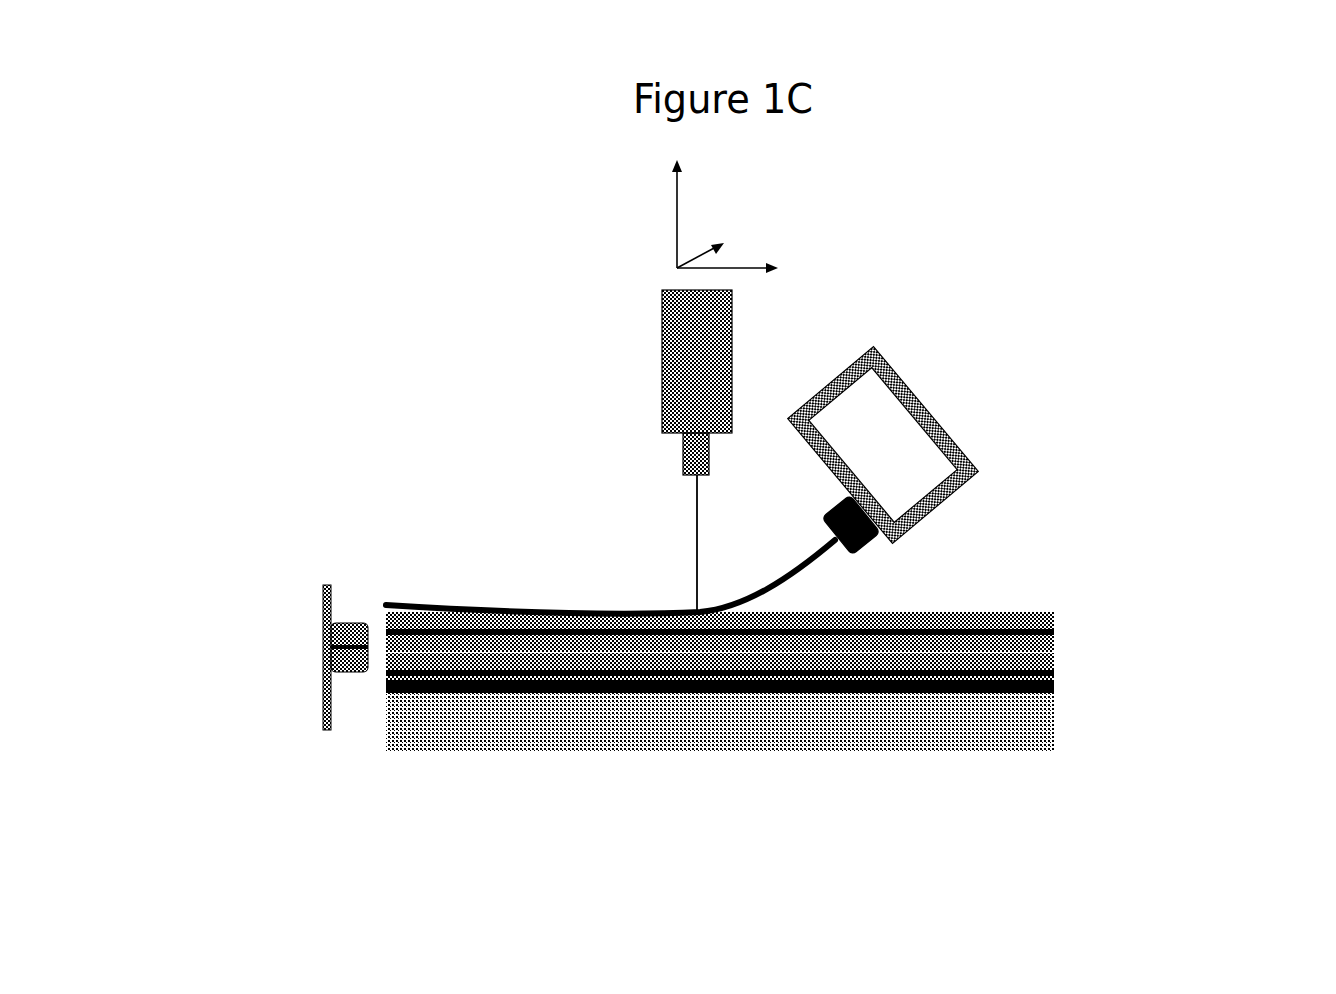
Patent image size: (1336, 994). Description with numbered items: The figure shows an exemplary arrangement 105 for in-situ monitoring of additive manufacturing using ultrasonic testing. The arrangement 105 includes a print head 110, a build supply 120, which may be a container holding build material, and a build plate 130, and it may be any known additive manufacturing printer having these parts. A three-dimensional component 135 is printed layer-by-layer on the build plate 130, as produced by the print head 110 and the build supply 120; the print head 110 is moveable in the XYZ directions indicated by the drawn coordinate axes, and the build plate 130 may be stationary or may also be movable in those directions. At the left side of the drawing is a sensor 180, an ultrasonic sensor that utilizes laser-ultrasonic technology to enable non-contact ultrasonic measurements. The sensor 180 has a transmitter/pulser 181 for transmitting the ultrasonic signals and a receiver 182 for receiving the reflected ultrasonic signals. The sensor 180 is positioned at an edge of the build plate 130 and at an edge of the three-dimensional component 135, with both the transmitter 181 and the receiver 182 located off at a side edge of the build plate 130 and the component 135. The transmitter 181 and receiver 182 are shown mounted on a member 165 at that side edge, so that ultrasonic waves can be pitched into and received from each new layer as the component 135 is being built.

The arrangement 105 is at (392, 462).
The print head 110 is at (733, 316).
The build supply 120 is at (938, 424).
The build plate 130 is at (793, 751).
The three-dimensional component 135 is at (1055, 640).
The mounting plate 165 is at (323, 715).
The sensor 180 is at (252, 659).
The transmitter/pulser 181 is at (323, 660).
The receiver 182 is at (323, 635).